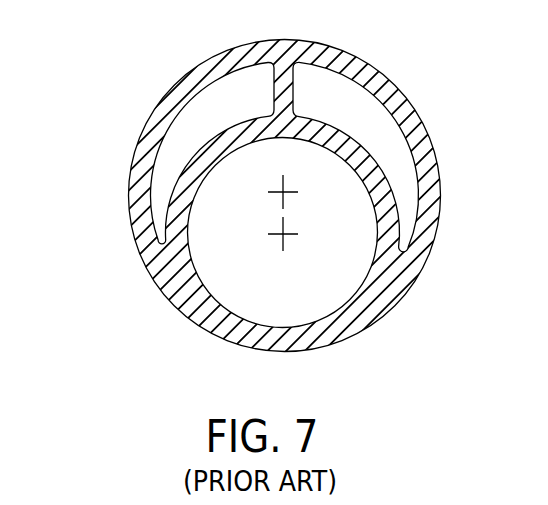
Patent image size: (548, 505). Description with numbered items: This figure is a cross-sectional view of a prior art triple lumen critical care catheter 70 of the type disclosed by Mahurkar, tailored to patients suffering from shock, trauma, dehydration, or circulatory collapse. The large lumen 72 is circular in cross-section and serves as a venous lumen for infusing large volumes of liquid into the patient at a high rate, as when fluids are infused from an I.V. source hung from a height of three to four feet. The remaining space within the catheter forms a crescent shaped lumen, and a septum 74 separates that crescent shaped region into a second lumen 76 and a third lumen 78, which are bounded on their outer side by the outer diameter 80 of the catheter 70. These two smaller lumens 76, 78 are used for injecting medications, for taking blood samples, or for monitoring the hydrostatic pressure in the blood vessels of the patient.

The catheter 70 is at (221, 347).
The large lumen 72 is at (217, 270).
The septum 74 is at (270, 91).
The second lumen 76 is at (187, 137).
The third lumen 78 is at (307, 81).
The outer diameter 80 is at (388, 89).